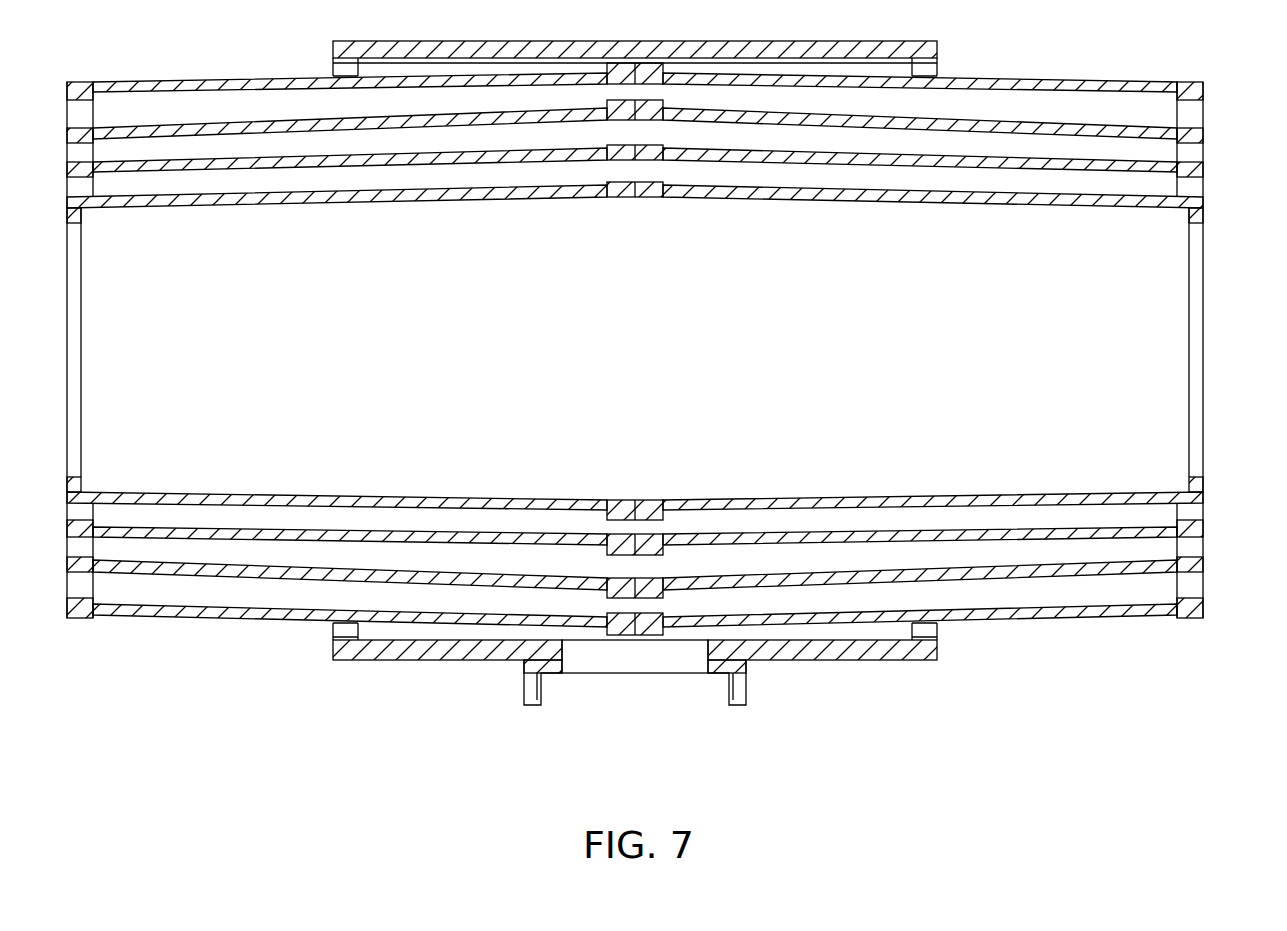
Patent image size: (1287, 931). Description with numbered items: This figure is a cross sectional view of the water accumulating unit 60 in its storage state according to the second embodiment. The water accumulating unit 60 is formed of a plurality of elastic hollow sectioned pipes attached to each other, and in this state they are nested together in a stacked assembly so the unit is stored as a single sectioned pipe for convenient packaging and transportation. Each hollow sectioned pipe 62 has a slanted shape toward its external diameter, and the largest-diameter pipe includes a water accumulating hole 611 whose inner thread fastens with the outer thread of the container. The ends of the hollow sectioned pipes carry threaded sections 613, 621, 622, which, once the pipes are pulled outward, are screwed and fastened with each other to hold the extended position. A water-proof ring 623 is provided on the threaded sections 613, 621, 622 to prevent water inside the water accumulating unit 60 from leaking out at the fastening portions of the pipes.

The water accumulating unit 60 is at (670, 404).
The hollow sectioned pipe 62 is at (187, 572).
The water accumulating hole 611 is at (606, 675).
The threaded section 613 is at (921, 642).
The threaded section 621 is at (646, 637).
The threaded section 622 is at (1205, 593).
The water-proof ring 623 is at (628, 500).